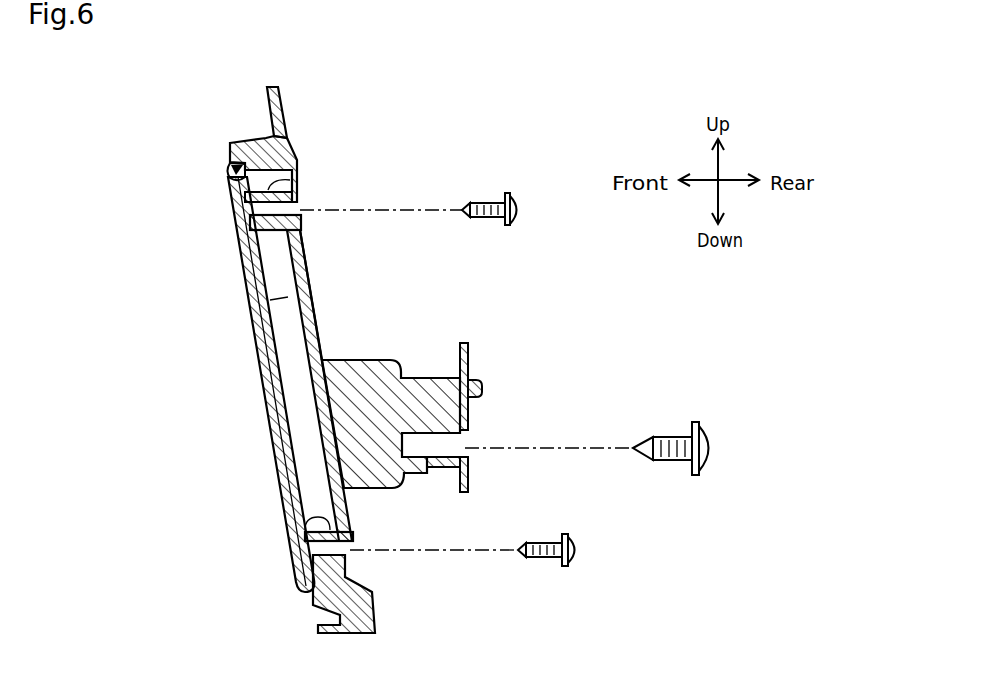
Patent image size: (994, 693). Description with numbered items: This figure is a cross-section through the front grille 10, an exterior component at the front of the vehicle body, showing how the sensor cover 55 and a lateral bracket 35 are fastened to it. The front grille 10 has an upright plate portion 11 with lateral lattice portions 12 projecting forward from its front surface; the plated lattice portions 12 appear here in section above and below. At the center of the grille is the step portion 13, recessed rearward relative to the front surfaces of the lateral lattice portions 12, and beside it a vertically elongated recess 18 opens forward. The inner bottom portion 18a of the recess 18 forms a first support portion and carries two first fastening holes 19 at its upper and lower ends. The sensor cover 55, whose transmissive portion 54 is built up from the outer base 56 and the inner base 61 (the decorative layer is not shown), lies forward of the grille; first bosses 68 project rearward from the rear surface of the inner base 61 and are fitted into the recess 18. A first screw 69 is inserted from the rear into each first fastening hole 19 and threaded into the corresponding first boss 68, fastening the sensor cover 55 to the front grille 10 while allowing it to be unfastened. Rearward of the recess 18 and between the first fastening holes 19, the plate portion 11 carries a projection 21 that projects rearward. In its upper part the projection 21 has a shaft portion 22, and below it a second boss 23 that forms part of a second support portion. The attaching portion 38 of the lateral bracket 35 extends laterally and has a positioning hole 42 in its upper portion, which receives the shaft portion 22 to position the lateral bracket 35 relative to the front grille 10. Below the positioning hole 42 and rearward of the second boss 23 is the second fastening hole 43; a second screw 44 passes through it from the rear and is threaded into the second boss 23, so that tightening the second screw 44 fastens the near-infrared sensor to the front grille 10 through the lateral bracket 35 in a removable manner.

The front grille 10 is at (295, 89).
The plate portion 11 is at (275, 88).
The lateral lattice portions 12 is at (245, 158).
The step portion 13 is at (227, 182).
The recesses 18 is at (314, 378).
The inner bottom portion 18a is at (313, 333).
The first fastening holes 19 is at (298, 204).
The projections 21 is at (394, 362).
The shaft portion 22 is at (482, 388).
The second boss 23 is at (445, 468).
The lateral brackets 35 is at (521, 474).
The attaching portion 38 is at (468, 462).
The positioning hole 42 is at (453, 378).
The second fastening hole 43 is at (470, 440).
The second screw 44 is at (668, 437).
The transmissive portion 54 is at (232, 384).
The sensor cover 55 is at (232, 384).
The outer base 56 is at (258, 305).
The inner base 61 is at (298, 297).
The first bosses 68 is at (290, 180).
The first screw 69 is at (490, 203).